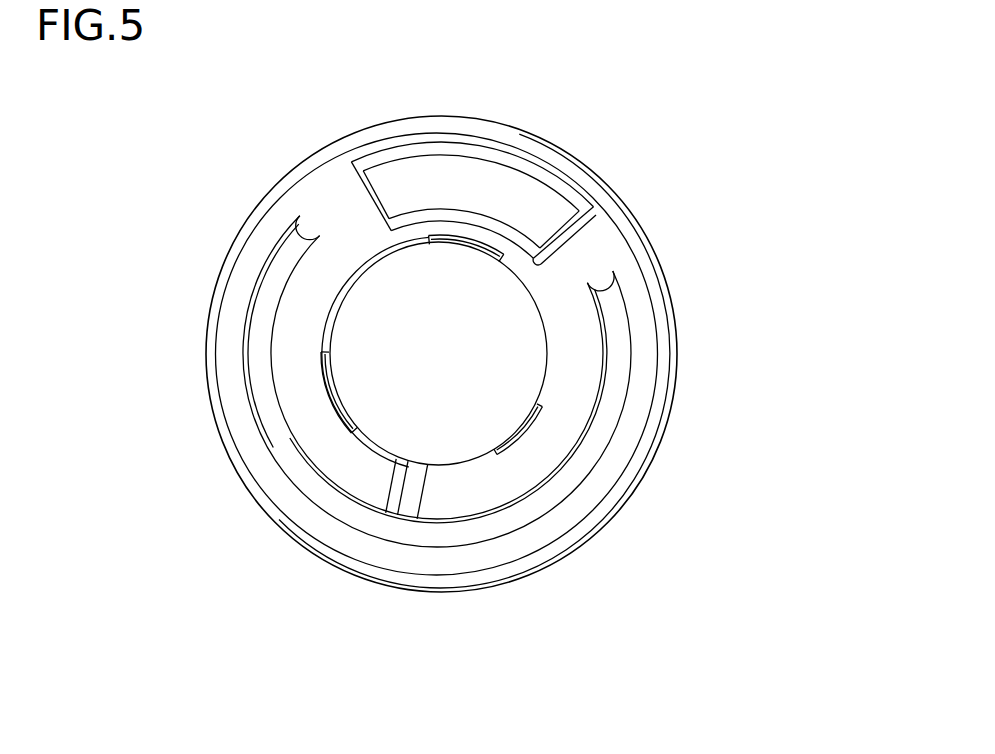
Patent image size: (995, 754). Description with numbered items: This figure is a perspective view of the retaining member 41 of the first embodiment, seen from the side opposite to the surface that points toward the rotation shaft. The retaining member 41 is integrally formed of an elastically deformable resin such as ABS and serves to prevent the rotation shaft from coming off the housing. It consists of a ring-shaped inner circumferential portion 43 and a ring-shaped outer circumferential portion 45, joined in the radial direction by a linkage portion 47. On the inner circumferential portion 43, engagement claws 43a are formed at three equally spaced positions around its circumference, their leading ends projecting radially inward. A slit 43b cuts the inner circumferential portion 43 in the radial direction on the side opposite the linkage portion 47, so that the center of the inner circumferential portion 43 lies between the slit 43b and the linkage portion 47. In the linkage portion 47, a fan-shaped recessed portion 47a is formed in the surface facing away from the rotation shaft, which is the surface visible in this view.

The retaining member 41 is at (673, 221).
The inner circumferential portion 43 is at (313, 320).
The engagement claws 43a is at (457, 253).
The slit 43b is at (410, 497).
The outer circumferential portion 45 is at (640, 378).
The linkage portion 47 is at (357, 207).
The fan-shaped recessed portion 47a is at (530, 200).